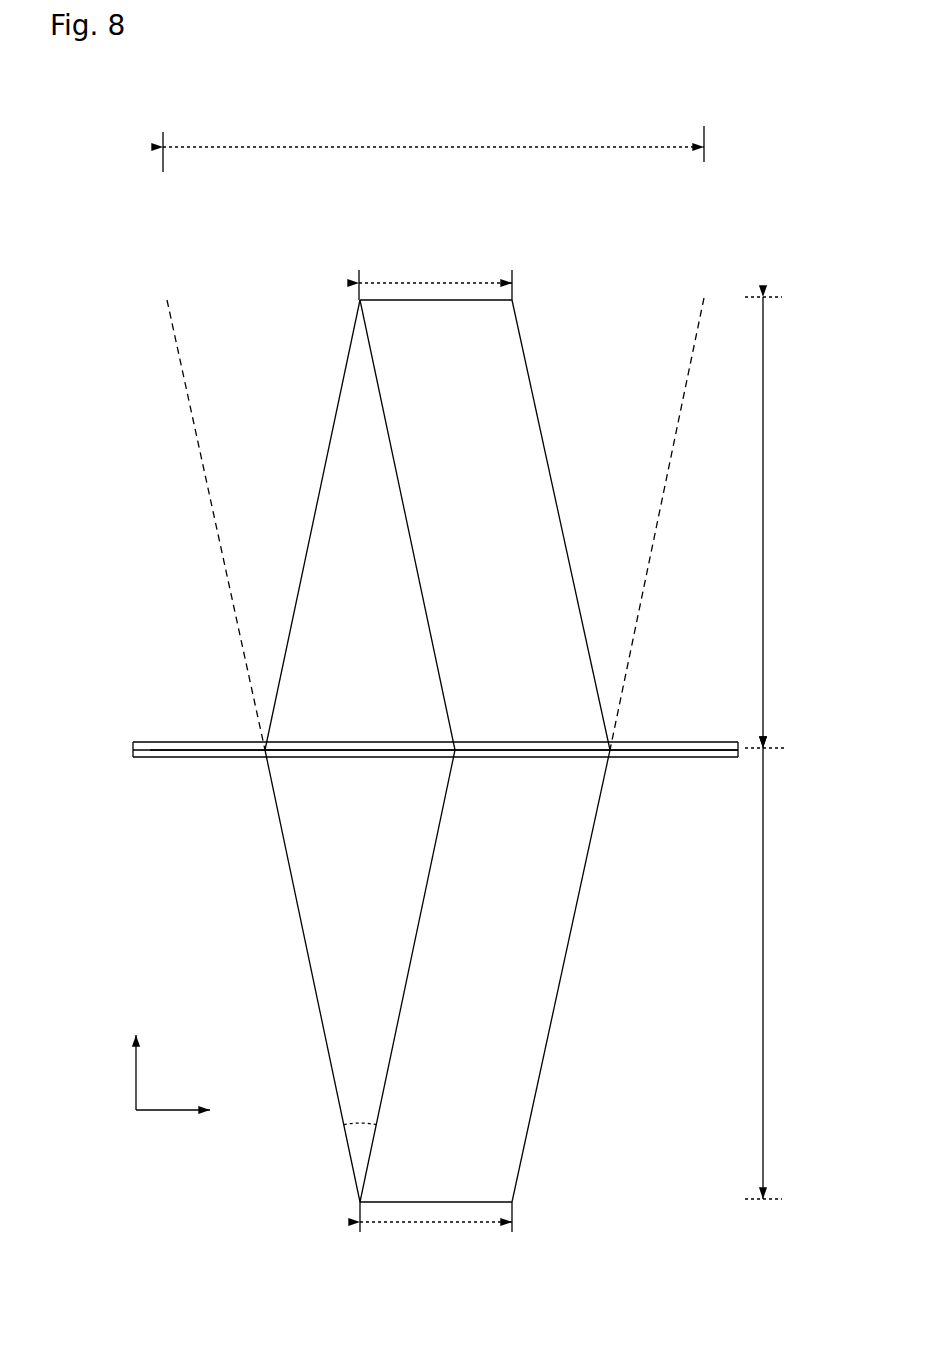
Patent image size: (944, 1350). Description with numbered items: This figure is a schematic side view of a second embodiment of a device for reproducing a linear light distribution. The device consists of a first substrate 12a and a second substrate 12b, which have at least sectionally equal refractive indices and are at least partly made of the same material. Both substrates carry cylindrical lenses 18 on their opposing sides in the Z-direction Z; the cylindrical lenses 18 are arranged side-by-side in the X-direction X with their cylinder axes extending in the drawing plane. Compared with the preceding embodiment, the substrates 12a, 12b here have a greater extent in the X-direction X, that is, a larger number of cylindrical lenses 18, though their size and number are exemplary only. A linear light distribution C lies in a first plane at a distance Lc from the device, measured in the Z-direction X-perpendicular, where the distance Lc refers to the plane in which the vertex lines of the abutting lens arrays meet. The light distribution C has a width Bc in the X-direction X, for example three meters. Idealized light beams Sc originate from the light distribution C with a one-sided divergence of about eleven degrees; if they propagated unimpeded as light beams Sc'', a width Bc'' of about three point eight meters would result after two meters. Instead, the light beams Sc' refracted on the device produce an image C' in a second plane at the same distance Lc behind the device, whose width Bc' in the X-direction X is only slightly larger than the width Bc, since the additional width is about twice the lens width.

The first substrate 12a is at (128, 763).
The second substrate 12b is at (137, 740).
The cylindrical lenses 18 is at (176, 750).
The width of the light distribution Bc is at (431, 1246).
The width of the image Bc' is at (435, 245).
The width after unimpeded propagation Bc'' is at (433, 107).
The linear light distribution C is at (436, 1143).
The image C' is at (436, 346).
The light beams originating from the light distribution Sc is at (422, 976).
The refracted light beams Sc' is at (437, 525).
The unimpeded light beams Sc'' is at (435, 524).
The distance Lc is at (763, 515).
The Z-direction Z is at (119, 1070).
The X-direction X is at (173, 1130).